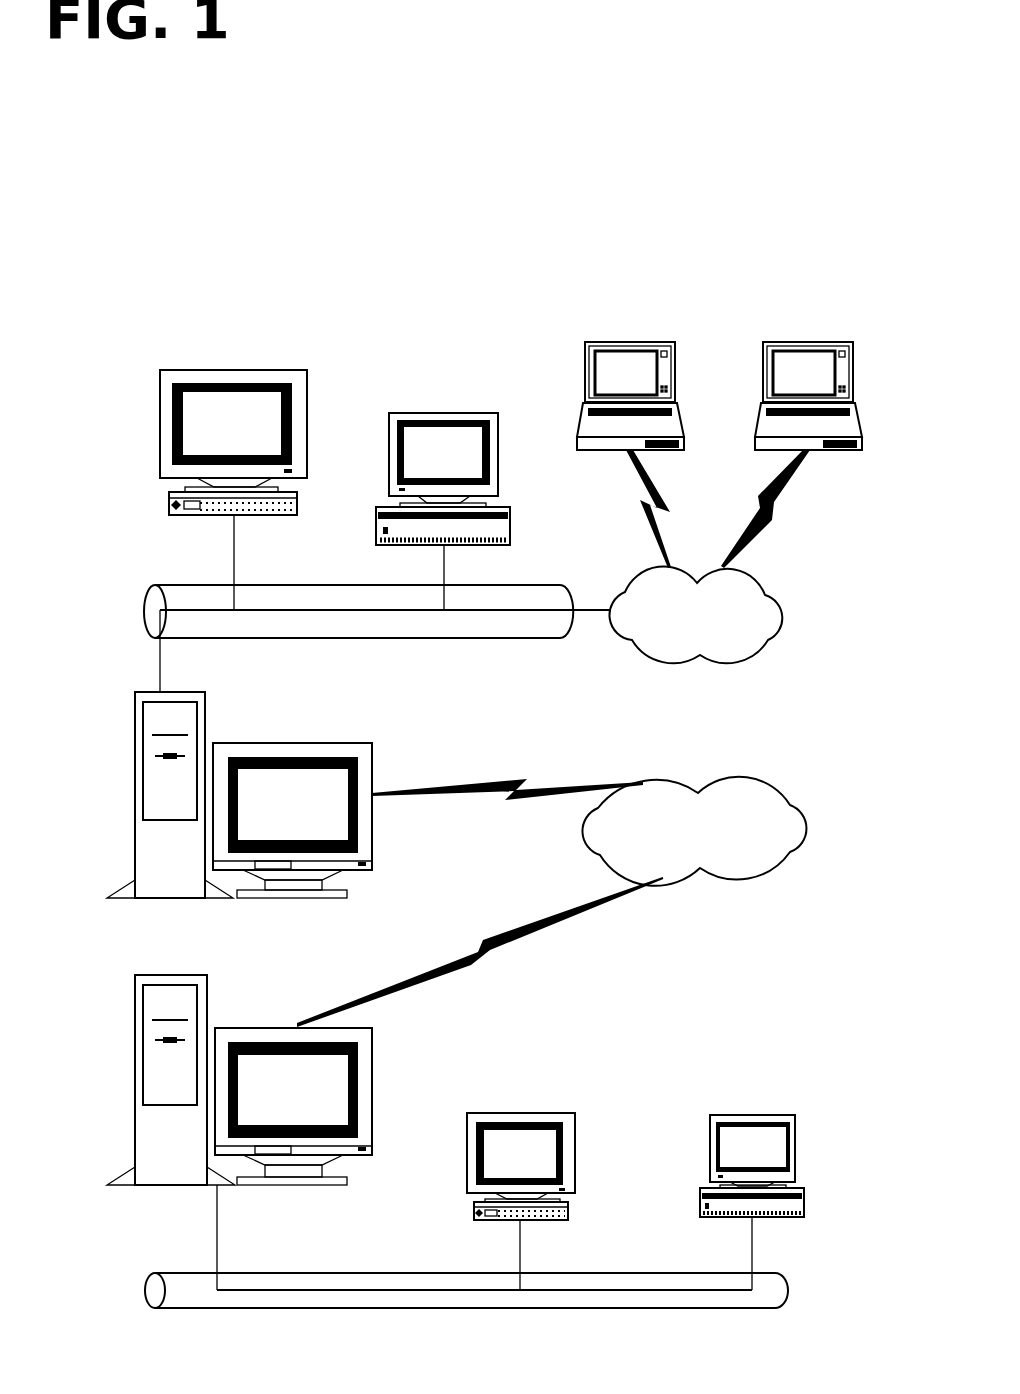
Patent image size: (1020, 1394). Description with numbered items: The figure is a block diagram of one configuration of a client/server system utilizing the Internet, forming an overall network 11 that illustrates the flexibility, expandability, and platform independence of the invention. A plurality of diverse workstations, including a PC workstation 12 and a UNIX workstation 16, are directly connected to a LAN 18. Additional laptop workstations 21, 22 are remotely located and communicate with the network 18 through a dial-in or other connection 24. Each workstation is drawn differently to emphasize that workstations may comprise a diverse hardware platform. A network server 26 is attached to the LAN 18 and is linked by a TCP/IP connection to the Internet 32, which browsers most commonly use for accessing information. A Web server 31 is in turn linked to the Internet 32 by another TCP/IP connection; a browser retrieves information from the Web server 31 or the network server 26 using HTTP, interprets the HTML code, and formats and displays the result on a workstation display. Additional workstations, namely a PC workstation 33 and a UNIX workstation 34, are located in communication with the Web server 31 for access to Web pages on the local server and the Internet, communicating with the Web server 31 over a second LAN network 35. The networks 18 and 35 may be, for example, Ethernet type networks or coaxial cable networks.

The network 11 is at (574, 238).
The workstation 12 is at (158, 440).
The workstation 16 is at (510, 512).
The LAN 18 is at (397, 632).
The workstation 21 is at (675, 395).
The workstation 22 is at (763, 395).
The dial-in connection 24 is at (670, 664).
The network server 26 is at (200, 690).
The Web server 31 is at (218, 1010).
The Internet 32 is at (733, 782).
The workstation 33 is at (577, 1148).
The workstation 34 is at (710, 1168).
The LAN network 35 is at (707, 1272).